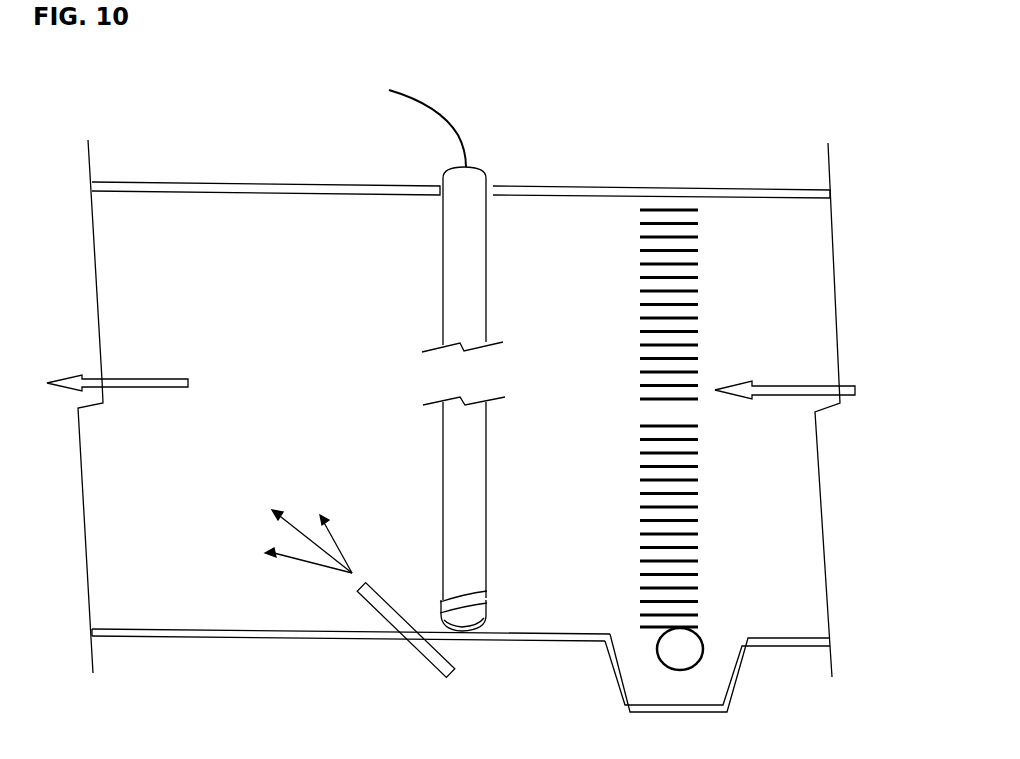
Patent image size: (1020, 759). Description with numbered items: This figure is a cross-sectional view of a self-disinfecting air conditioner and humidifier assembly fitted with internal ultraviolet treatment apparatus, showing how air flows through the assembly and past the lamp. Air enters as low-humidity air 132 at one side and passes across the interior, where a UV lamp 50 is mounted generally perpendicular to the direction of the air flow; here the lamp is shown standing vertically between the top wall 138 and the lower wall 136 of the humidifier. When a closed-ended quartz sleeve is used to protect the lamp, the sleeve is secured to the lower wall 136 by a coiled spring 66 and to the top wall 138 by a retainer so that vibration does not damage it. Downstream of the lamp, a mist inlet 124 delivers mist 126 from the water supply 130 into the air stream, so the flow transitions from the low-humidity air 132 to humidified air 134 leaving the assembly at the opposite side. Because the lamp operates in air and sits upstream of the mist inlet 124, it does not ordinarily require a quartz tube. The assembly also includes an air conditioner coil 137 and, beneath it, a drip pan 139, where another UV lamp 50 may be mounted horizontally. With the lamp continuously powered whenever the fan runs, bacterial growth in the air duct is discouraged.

The top wall 138 is at (372, 181).
The UV lamp 50 is at (483, 166).
The coiled spring 66 is at (488, 592).
The humidified air 134 is at (117, 365).
The low-humidity air 132 is at (785, 372).
The air conditioner coil 137 is at (705, 485).
The mist 126 is at (270, 541).
The mist inlet 124 is at (376, 644).
The water supply 130 is at (428, 644).
The lower wall 136 is at (238, 648).
The drip pan 139 is at (743, 683).